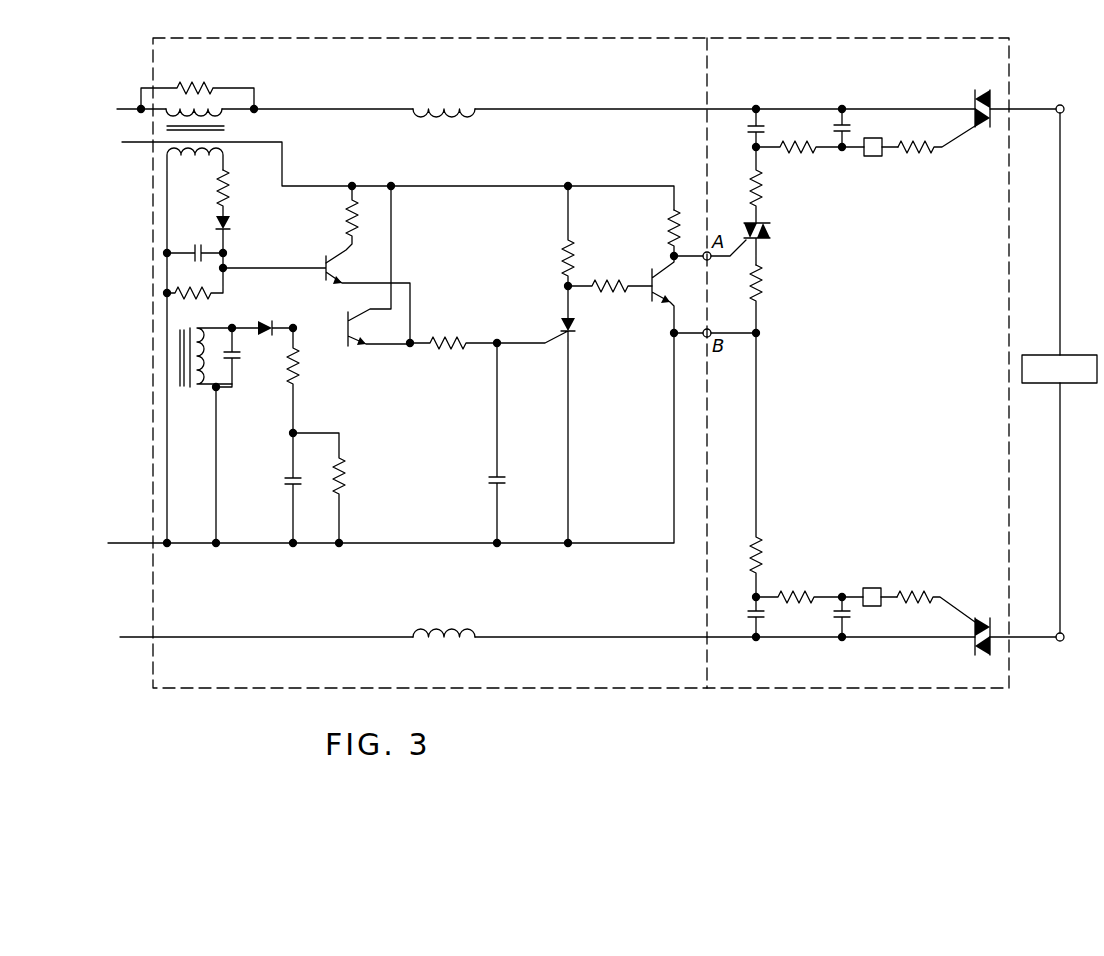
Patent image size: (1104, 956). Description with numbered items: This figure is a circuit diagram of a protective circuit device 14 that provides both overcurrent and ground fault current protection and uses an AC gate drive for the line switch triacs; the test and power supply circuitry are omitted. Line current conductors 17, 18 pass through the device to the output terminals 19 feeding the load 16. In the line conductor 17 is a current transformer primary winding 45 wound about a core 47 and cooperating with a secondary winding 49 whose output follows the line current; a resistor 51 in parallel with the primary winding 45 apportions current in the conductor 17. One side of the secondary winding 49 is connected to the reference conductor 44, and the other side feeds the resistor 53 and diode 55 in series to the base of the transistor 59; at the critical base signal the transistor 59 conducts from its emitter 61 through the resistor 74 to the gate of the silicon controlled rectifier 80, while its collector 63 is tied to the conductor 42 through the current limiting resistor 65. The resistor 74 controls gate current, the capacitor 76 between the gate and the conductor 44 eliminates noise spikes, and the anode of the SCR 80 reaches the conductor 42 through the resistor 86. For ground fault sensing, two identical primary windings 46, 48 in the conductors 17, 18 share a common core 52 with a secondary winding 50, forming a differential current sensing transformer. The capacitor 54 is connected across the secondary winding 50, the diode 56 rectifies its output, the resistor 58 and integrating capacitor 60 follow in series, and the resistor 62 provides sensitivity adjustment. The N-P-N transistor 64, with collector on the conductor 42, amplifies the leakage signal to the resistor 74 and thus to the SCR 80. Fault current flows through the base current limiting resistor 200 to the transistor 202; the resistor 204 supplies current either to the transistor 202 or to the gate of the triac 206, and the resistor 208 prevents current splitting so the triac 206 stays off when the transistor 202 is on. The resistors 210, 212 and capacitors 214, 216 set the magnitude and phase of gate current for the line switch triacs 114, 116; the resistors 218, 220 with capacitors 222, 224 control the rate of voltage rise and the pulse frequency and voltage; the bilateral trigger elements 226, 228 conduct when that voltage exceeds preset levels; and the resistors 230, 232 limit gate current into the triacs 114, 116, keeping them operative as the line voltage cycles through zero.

The control circuit enclosure 14 is at (614, 36).
The load 16 is at (1080, 355).
The line conductor 17 is at (124, 107).
The line current conductor 18 is at (128, 640).
The output terminals 19 is at (1064, 105).
The conductor 42 is at (511, 186).
The conductor 44 is at (410, 546).
The current transformer primary winding 45 is at (163, 116).
The transformer primary winding 46 is at (441, 120).
The core 47 is at (230, 129).
The transformer primary winding 48 is at (456, 630).
The current transformer secondary winding 49 is at (200, 162).
The secondary winding 50 is at (201, 388).
The resistor 51 is at (203, 90).
The common core 52 is at (183, 390).
The resistor 53 is at (233, 187).
The capacitor 54 is at (240, 358).
The diode 55 is at (233, 223).
The diode 56 is at (266, 320).
The resistor 58 is at (288, 376).
The transistor 59 is at (320, 275).
The capacitor 60 is at (285, 480).
The emitter 61 is at (198, 245).
The resistor 62 is at (350, 478).
The collector 63 is at (207, 296).
The transistor 64 is at (344, 343).
The resistor 65 is at (347, 216).
The resistor 74 is at (445, 340).
The capacitor 76 is at (508, 478).
The silicon controlled rectifier 80 is at (554, 319).
The resistor 86 is at (578, 240).
The line switch triac 114 is at (981, 82).
The line switch triac 116 is at (976, 659).
The base current limiting resistor 200 is at (616, 296).
The transistor 202 is at (647, 266).
The resistor 204 is at (666, 226).
The triac 206 is at (776, 232).
The resistor 208 is at (770, 284).
The resistor 210 is at (766, 196).
The resistor 212 is at (766, 546).
The capacitor 214 is at (751, 131).
The capacitor 216 is at (748, 613).
The resistor 218 is at (810, 155).
The resistor 220 is at (801, 590).
The capacitor 222 is at (850, 129).
The capacitor 224 is at (835, 616).
The bilateral trigger element 226 is at (874, 157).
The bilateral trigger element 228 is at (875, 588).
The resistor 230 is at (920, 156).
The resistor 232 is at (929, 591).